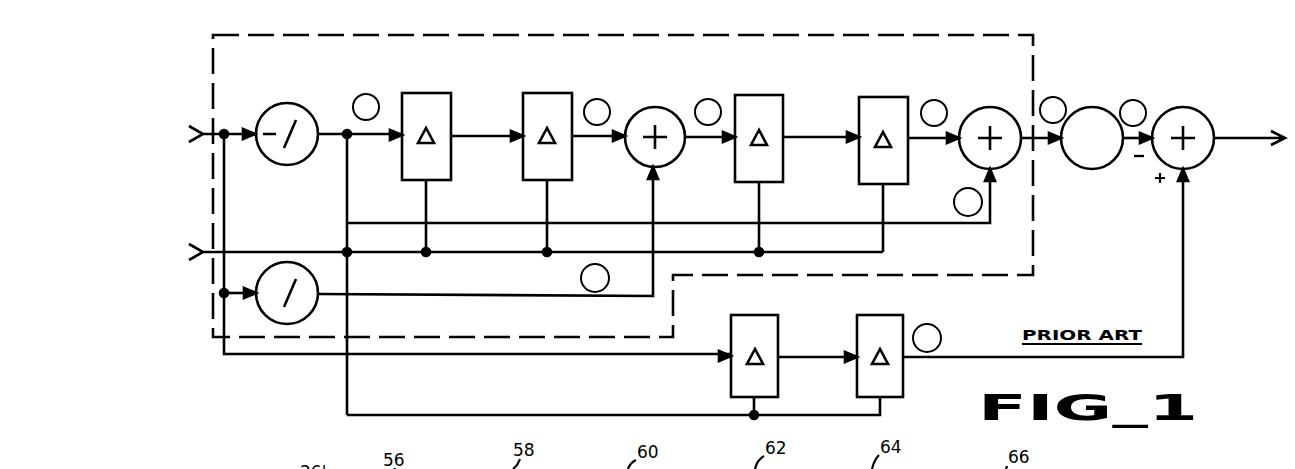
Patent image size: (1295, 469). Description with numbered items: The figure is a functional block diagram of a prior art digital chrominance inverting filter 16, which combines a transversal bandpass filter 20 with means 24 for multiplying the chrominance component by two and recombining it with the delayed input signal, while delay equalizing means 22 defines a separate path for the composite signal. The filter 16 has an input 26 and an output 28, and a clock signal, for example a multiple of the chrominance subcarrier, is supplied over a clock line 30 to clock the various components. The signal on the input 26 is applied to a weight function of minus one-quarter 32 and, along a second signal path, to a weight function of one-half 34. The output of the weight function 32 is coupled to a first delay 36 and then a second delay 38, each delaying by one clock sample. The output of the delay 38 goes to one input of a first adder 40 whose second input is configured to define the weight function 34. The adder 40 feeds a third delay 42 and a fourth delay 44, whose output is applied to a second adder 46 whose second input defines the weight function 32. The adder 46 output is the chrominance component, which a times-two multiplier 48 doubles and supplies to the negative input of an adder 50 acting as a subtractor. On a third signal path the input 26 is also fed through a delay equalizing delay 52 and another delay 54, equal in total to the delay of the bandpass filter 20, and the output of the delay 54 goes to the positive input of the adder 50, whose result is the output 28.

The chrominance inverting filter 16 is at (1118, 233).
The transversal bandpass filter 20 is at (205, 53).
The delay equalizing means 22 is at (808, 318).
The means for multiplying and re-combining 24 is at (1150, 86).
The input 26 is at (206, 133).
The output 28 is at (1240, 139).
The clock line 30 is at (206, 250).
The weight function of minus one-quarter 32 is at (289, 103).
The weight function of one-half 34 is at (311, 277).
The first delay 36 is at (432, 93).
The second delay 38 is at (553, 93).
The first adder 40 is at (661, 107).
The third delay 42 is at (765, 95).
The fourth delay 44 is at (885, 97).
The second adder 46 is at (998, 108).
The times-two multiplier 48 is at (1097, 107).
The adder 50 is at (1197, 110).
The delay equalizing delay 52 is at (746, 315).
The delay 54 is at (882, 315).